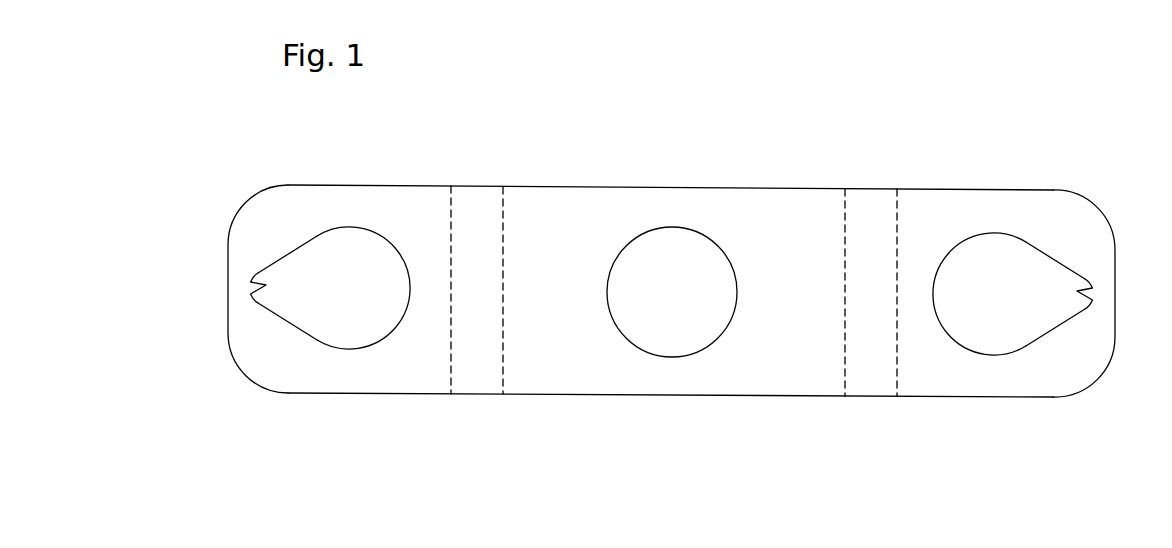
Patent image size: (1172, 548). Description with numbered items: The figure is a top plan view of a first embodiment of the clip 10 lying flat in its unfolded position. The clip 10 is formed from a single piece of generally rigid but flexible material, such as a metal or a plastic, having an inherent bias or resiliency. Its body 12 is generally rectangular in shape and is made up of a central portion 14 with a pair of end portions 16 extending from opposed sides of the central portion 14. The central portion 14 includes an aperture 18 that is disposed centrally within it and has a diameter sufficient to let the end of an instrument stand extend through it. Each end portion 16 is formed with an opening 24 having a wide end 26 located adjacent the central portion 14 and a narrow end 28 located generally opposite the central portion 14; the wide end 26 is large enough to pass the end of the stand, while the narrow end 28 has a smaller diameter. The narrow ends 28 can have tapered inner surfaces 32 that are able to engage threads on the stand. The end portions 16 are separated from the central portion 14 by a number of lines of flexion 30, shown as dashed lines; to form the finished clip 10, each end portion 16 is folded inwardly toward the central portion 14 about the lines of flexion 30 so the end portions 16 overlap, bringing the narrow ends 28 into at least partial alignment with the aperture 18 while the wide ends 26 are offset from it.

The clip 10 is at (667, 135).
The body 12 is at (651, 396).
The central portion 14 is at (735, 202).
The end portions 16 is at (958, 202).
The aperture 18 is at (642, 232).
The opening 24 is at (674, 277).
The wide end 26 is at (408, 296).
The narrow end 28 is at (265, 284).
The lines of flexion 30 is at (502, 397).
The tapered inner surfaces 32 is at (276, 318).